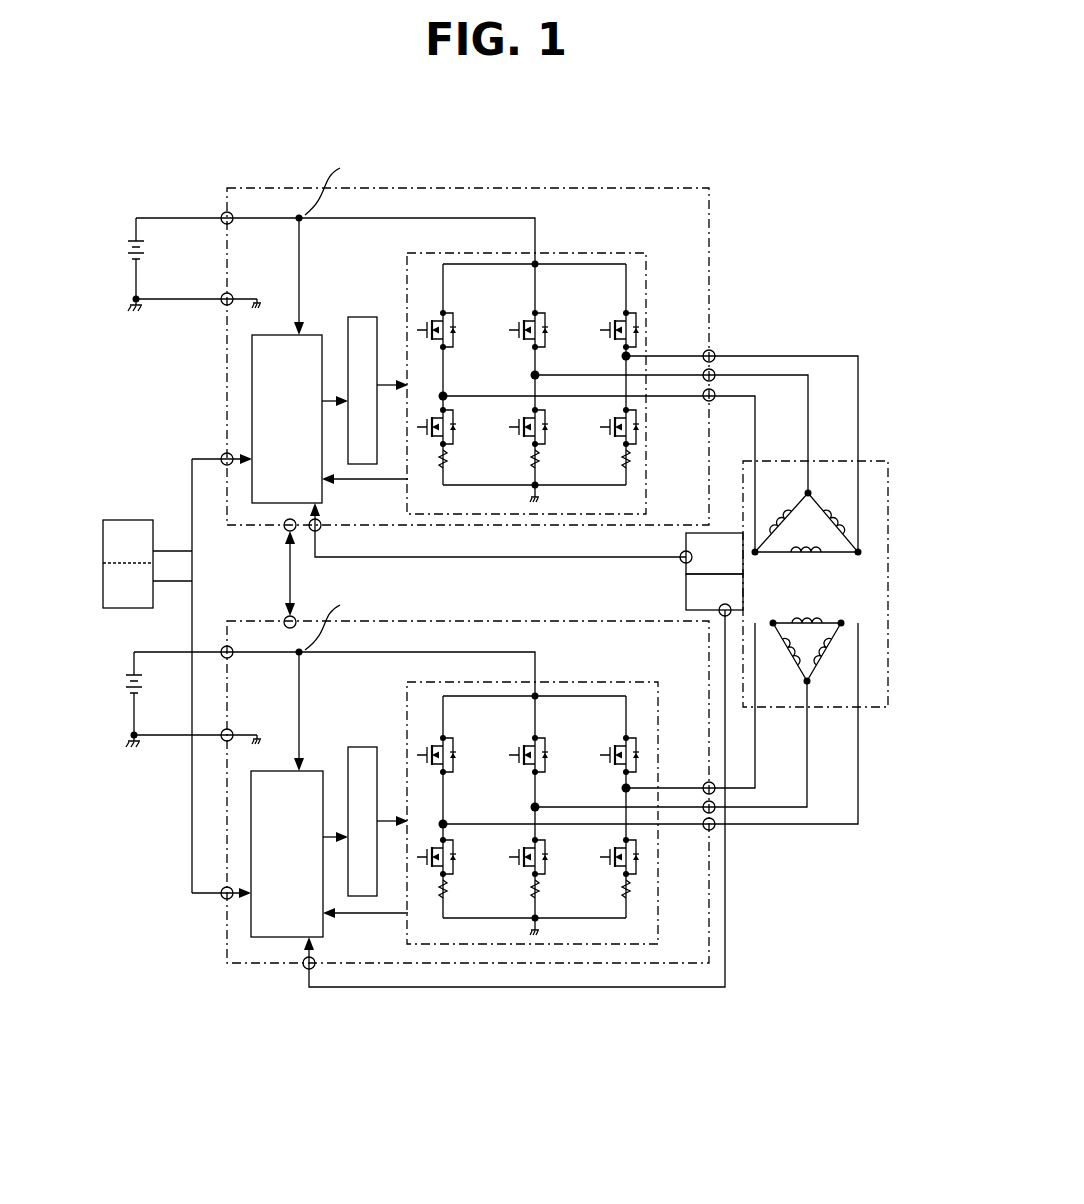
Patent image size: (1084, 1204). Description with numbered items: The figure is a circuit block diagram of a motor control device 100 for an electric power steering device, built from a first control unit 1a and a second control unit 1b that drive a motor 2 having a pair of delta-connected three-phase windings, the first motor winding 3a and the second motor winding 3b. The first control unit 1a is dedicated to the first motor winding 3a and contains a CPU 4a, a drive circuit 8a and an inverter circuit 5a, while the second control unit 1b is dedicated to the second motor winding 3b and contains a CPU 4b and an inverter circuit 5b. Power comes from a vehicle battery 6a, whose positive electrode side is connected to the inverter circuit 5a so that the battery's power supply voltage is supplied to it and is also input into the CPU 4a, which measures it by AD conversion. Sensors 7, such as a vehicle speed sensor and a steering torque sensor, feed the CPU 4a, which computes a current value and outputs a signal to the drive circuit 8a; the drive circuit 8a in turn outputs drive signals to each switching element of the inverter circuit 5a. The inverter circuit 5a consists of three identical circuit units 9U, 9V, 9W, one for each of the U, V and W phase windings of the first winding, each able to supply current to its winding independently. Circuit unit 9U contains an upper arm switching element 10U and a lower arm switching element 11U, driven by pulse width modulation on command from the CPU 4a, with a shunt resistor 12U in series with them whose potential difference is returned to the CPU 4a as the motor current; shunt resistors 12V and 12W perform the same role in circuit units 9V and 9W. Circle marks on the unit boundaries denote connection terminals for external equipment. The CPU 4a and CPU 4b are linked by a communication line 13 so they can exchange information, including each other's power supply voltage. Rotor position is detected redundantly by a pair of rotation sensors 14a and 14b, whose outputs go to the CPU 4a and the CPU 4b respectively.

The motor control device 100 is at (690, 132).
The first control unit 1a is at (552, 188).
The second control unit 1b is at (582, 963).
The motor 2 is at (823, 461).
The first motor winding 3a is at (838, 520).
The second motor winding 3b is at (838, 665).
The CPU 4a is at (252, 390).
The CPU 4b is at (251, 823).
The inverter circuit 5a is at (408, 500).
The inverter circuit 5b is at (408, 700).
The battery 6a is at (130, 238).
The sensors 7 is at (112, 520).
The drive circuit 8a is at (362, 317).
The circuit unit 9U is at (443, 275).
The circuit unit 9V is at (535, 285).
The circuit unit 9W is at (626, 285).
The upper arm switching element 10U is at (455, 318).
The lower arm switching element 11U is at (455, 440).
The shunt resistor 12U is at (446, 470).
The shunt resistor 12V is at (540, 470).
The shunt resistor 12W is at (632, 462).
The communication line 13 is at (290, 575).
The rotation sensor 14a is at (686, 538).
The rotation sensor 14b is at (686, 583).